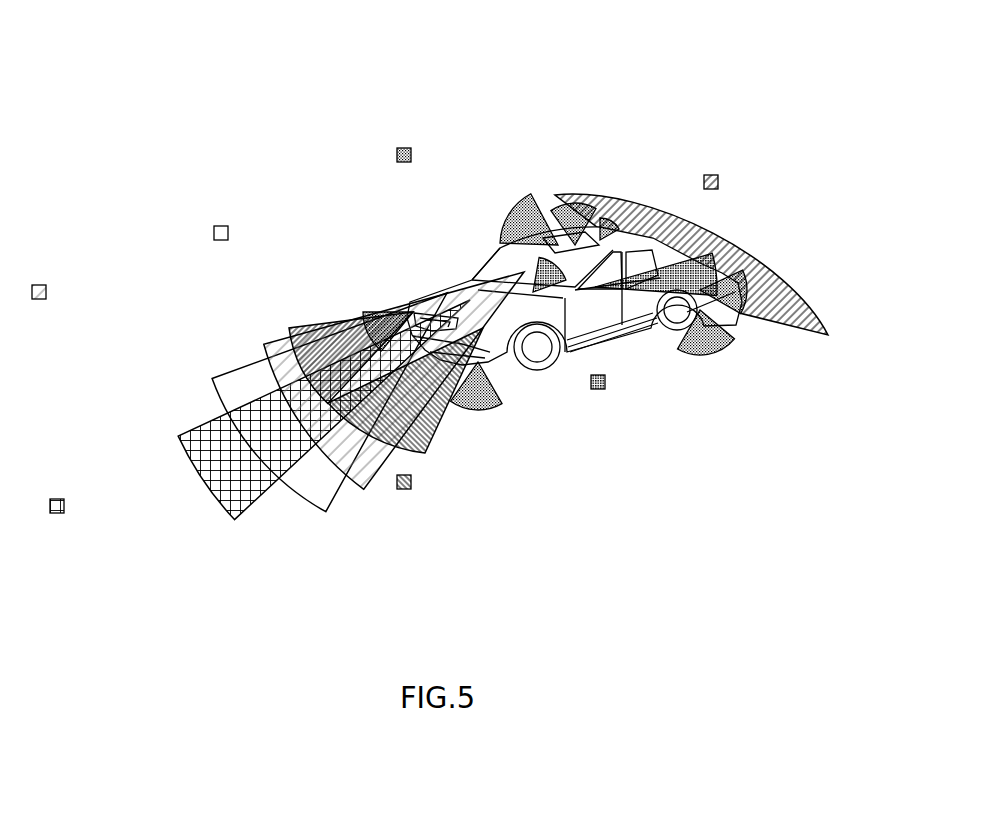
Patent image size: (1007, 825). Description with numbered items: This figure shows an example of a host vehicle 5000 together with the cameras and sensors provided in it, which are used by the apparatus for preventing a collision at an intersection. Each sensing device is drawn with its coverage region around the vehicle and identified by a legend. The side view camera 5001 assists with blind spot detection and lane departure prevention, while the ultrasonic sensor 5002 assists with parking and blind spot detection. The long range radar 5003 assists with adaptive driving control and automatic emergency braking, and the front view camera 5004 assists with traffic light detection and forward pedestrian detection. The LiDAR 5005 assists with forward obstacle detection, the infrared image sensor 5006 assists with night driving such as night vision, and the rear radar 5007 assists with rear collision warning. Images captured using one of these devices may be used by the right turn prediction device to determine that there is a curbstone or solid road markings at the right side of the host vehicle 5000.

The host vehicle 5000 is at (573, 320).
The side view camera 5001 is at (733, 395).
The ultrasonic sensor 5002 is at (458, 142).
The long range radar 5003 is at (306, 217).
The front view camera 5004 is at (117, 278).
The light detection and ranging (LiDAR) 5005 is at (108, 495).
The infrared image sensor 5006 is at (468, 490).
The rear radar 5007 is at (792, 168).